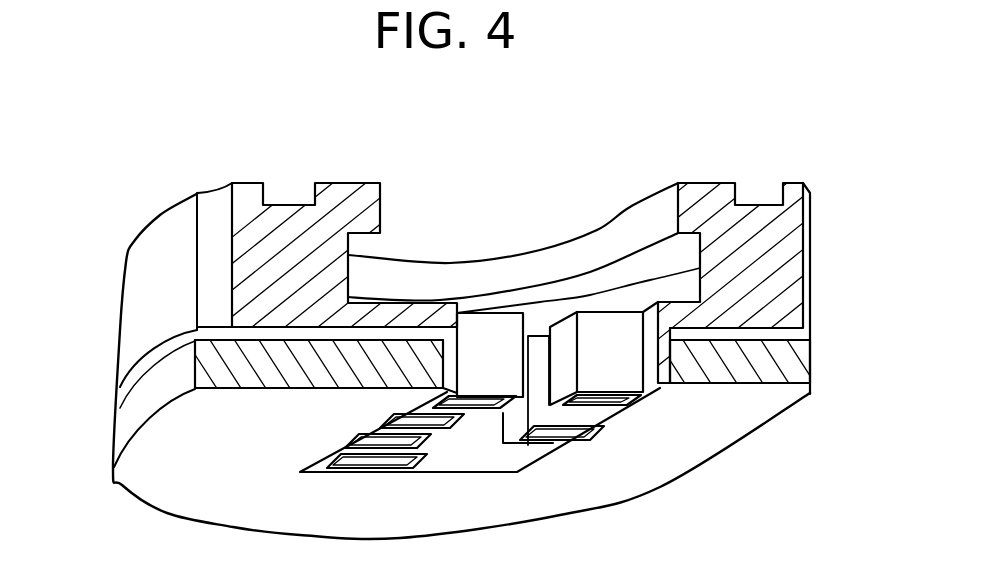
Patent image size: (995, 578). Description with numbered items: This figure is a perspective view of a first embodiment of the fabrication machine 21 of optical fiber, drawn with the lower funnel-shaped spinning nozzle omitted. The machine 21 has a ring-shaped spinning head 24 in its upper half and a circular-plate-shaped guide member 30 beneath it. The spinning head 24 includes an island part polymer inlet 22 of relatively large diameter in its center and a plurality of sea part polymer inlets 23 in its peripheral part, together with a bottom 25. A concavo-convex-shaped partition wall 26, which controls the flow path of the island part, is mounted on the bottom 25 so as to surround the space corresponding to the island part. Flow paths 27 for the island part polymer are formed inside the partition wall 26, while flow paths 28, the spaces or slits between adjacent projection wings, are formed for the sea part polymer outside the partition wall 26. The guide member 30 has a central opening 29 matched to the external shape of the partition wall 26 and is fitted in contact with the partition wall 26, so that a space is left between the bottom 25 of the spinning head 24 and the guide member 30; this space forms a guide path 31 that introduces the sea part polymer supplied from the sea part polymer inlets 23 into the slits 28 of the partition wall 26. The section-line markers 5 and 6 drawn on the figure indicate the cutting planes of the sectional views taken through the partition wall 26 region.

The fabrication machine of optical fiber 21 is at (110, 345).
The island part polymer inlet 22 is at (678, 210).
The sea part polymer inlets 23 is at (228, 210).
The ring-shaped spinning head 24 is at (456, 245).
The bottom 25 is at (385, 310).
The concavo-convex-shaped partition wall 26 is at (614, 432).
The flow paths of the island part polymer 27 is at (540, 345).
The flow paths for the sea part polymer 28 is at (330, 473).
The opening 29 is at (470, 376).
The circular-plate-shaped guide member 30 is at (163, 482).
The guide path 31 is at (268, 333).
The section line 5 is at (594, 306).
The section line 6 is at (523, 302).